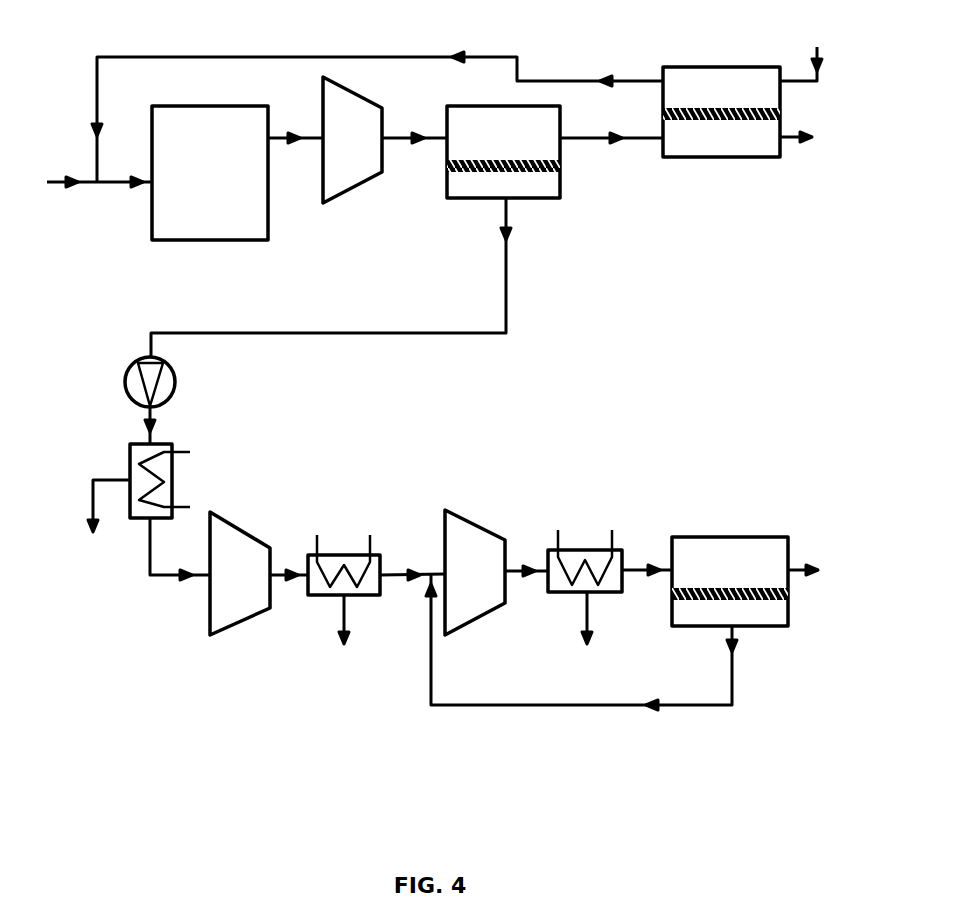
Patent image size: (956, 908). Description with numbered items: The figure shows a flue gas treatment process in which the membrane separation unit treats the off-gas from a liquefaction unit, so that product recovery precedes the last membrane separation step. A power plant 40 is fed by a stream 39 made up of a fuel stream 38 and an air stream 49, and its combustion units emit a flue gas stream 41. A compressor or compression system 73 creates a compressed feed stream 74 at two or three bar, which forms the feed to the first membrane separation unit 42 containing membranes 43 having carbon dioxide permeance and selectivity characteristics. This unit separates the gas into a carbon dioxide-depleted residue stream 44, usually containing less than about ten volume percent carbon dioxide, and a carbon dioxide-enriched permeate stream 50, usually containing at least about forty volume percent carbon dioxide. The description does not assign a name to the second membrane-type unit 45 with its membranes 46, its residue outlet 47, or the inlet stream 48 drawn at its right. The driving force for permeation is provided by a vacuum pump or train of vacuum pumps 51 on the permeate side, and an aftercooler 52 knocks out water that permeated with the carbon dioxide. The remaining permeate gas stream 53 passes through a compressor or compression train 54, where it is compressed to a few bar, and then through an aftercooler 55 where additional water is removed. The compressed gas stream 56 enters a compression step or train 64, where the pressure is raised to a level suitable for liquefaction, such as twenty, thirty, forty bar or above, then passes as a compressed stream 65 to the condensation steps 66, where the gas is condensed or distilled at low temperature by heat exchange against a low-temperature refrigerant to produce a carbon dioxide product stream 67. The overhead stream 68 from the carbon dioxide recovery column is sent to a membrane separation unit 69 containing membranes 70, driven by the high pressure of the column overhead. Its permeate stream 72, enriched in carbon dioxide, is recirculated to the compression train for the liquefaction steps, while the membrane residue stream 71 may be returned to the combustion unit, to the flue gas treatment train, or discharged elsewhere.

The fuel stream 38 is at (67, 174).
The feed stream 39 is at (124, 174).
The power plant 40 is at (210, 240).
The flue gas stream 41 is at (295, 129).
The compressor 73 is at (353, 190).
The compressed feed stream 74 is at (414, 129).
The first membrane separation unit 42 is at (532, 152).
The membranes 43 is at (488, 158).
The carbon dioxide-depleted residue stream 44 is at (611, 130).
The second membrane separation unit 45 is at (721, 138).
The membrane 46 is at (697, 107).
The residue outlet stream 47 is at (807, 137).
The sweep gas inlet stream 48 is at (803, 52).
The air stream 49 is at (377, 117).
The carbon dioxide-enriched permeate stream 50 is at (345, 278).
The vacuum pump 51 is at (176, 380).
The aftercooler 52 is at (172, 485).
The remaining permeate gas stream 53 is at (180, 549).
The compressor 54 is at (243, 620).
The aftercooler 55 is at (348, 548).
The compressed gas stream 56 is at (412, 563).
The compression step 64 is at (482, 528).
The compressed stream 65 is at (526, 560).
The condensation steps 66 is at (592, 546).
The carbon dioxide product stream 67 is at (587, 631).
The overhead stream 68 is at (647, 559).
The membrane separation unit 69 is at (730, 555).
The membranes 70 is at (708, 588).
The membrane residue stream 71 is at (815, 570).
The permeate stream 72 is at (581, 642).